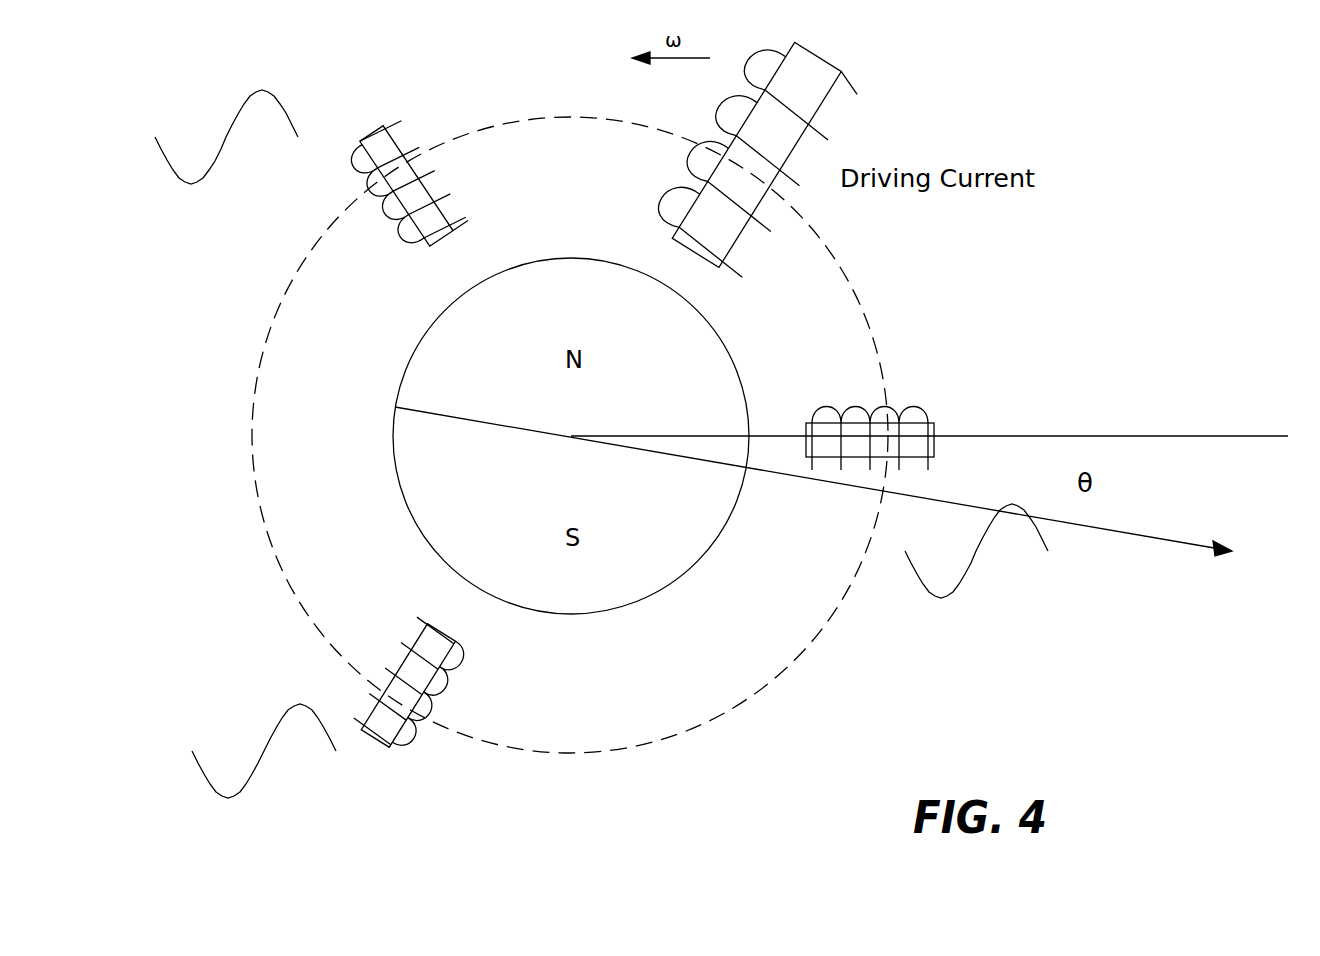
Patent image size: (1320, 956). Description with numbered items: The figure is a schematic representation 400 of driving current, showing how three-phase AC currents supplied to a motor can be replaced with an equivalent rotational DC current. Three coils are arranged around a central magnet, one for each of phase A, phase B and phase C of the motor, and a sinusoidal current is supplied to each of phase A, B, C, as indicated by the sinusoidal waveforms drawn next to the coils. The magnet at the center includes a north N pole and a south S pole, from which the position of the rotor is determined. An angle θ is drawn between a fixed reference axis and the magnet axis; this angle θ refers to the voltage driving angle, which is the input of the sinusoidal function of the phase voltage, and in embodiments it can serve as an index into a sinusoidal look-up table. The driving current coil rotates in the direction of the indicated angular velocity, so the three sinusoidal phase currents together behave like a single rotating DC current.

The driving current waveform 400 is at (220, 113).
The phase A is at (361, 186).
The phase B is at (410, 714).
The phase C is at (870, 473).